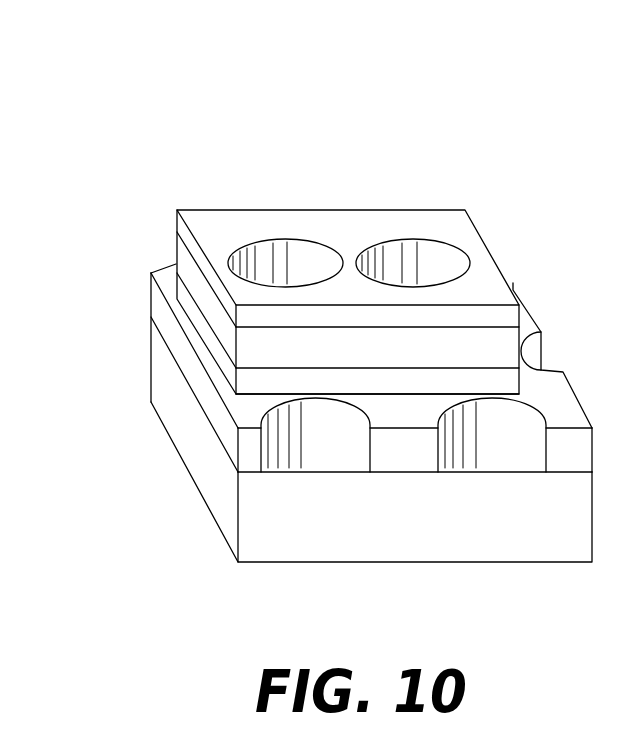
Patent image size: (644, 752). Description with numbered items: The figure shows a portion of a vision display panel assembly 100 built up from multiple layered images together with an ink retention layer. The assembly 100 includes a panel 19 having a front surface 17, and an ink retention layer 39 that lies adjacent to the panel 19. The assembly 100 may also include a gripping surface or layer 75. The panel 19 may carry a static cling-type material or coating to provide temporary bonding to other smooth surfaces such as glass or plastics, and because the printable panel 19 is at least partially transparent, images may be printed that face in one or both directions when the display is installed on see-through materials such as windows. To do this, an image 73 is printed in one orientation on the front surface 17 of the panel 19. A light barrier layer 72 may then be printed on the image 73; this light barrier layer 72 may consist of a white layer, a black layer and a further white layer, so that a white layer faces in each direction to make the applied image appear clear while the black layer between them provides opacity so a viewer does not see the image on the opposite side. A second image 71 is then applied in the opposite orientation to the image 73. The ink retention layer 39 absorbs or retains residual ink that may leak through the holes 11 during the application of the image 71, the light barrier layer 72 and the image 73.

The vision display panel assembly 100 is at (547, 196).
The holes 11 is at (401, 238).
The front surface 17 is at (555, 397).
The panel 19 is at (152, 295).
The ink retention layer 39 is at (153, 355).
The image 71 is at (176, 228).
The light barrier layer 72 is at (176, 262).
The image 73 is at (176, 288).
The gripping surface or layer 75 is at (288, 576).